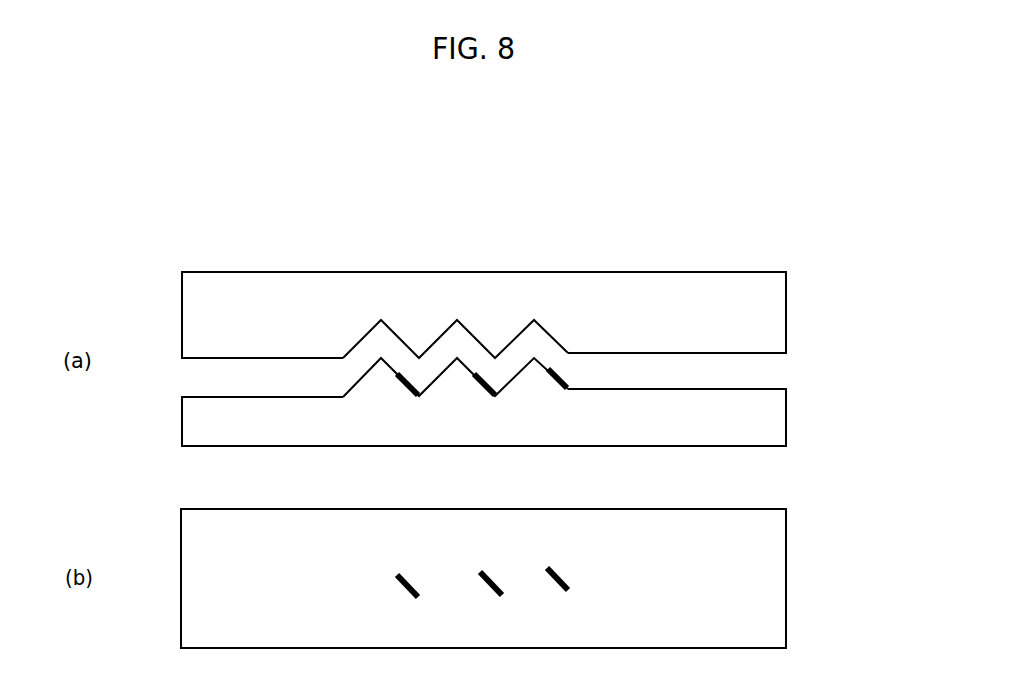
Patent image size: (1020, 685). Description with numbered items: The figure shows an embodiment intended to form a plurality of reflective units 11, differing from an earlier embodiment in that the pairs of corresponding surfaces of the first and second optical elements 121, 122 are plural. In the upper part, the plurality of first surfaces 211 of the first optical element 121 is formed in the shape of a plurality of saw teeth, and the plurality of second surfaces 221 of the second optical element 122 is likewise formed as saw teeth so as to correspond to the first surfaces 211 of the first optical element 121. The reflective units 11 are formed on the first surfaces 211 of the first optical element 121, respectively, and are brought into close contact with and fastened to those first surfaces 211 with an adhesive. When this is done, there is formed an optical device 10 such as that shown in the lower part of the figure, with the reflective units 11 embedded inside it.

The optical device 10 is at (786, 581).
The reflective units 11 is at (568, 381).
The first optical element 121 is at (182, 425).
The second optical element 122 is at (717, 271).
The first surfaces 211 is at (539, 361).
The second surfaces 221 is at (394, 336).